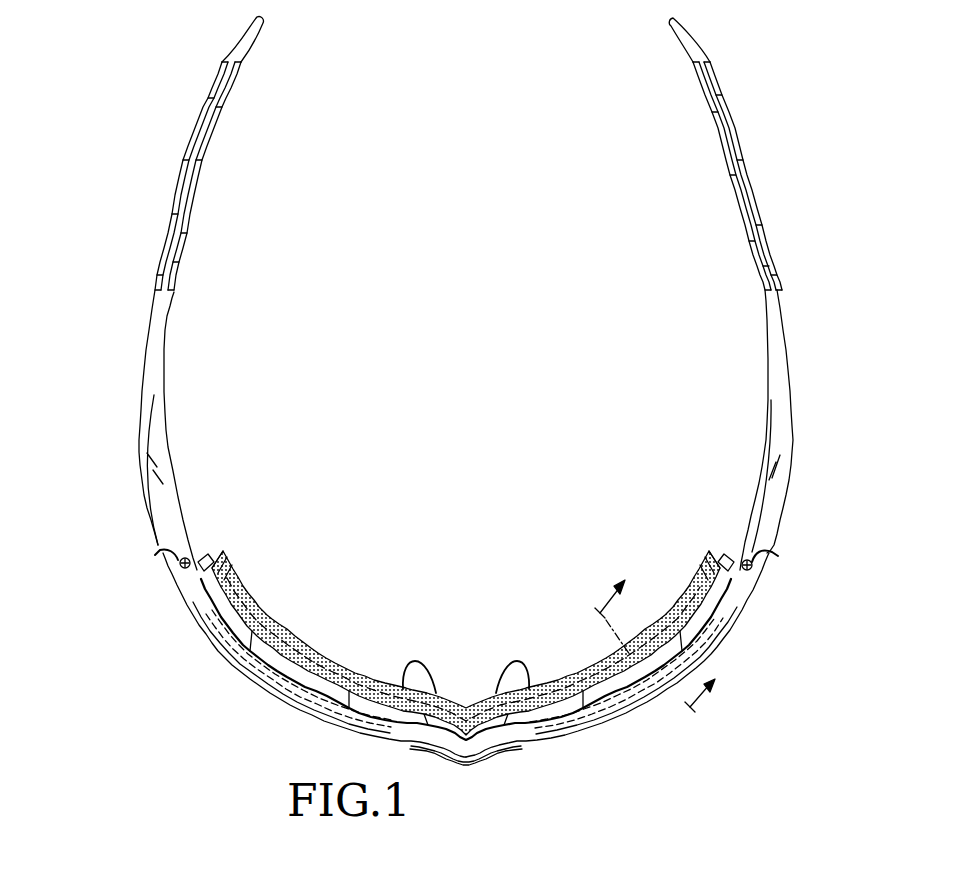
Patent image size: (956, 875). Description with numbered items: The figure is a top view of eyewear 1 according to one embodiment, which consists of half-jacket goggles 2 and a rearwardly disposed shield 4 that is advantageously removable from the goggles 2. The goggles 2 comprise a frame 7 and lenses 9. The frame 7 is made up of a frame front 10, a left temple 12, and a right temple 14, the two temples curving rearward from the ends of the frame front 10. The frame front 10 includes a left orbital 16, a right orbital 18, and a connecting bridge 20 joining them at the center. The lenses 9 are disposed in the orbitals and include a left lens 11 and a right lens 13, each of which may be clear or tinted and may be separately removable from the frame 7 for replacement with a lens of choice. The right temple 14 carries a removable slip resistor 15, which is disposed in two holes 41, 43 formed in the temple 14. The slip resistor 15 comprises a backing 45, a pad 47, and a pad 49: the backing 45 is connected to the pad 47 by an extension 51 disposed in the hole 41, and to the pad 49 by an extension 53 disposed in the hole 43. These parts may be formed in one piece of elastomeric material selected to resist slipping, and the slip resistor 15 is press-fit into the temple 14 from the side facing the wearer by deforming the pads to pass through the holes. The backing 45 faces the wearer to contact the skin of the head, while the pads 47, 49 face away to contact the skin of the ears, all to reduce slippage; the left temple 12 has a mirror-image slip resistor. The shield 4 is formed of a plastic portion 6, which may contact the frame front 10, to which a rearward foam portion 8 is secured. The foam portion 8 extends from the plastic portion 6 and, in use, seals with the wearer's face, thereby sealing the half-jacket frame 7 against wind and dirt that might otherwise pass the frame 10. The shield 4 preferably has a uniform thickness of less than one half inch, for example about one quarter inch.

The eyewear 1 is at (443, 417).
The half-jacket goggles 2 is at (445, 643).
The shield 4 is at (740, 562).
The plastic portion 6 is at (205, 562).
The frame 7 is at (765, 482).
The foam portion 8 is at (226, 553).
The lenses 9 is at (540, 642).
The frame front 10 is at (180, 582).
The left lens 11 is at (282, 630).
The left temple 12 is at (188, 181).
The right lens 13 is at (476, 620).
The right temple 14 is at (750, 182).
The slip resistor 15 is at (708, 181).
The left orbital 16 is at (258, 682).
The right orbital 18 is at (618, 713).
The connecting bridge 20 is at (476, 753).
The hole 41 is at (745, 133).
The hole 43 is at (778, 260).
The backing 45 is at (742, 190).
The pad 47 is at (780, 296).
The pad 49 is at (712, 72).
The extension 51 is at (712, 113).
The extension 53 is at (757, 256).